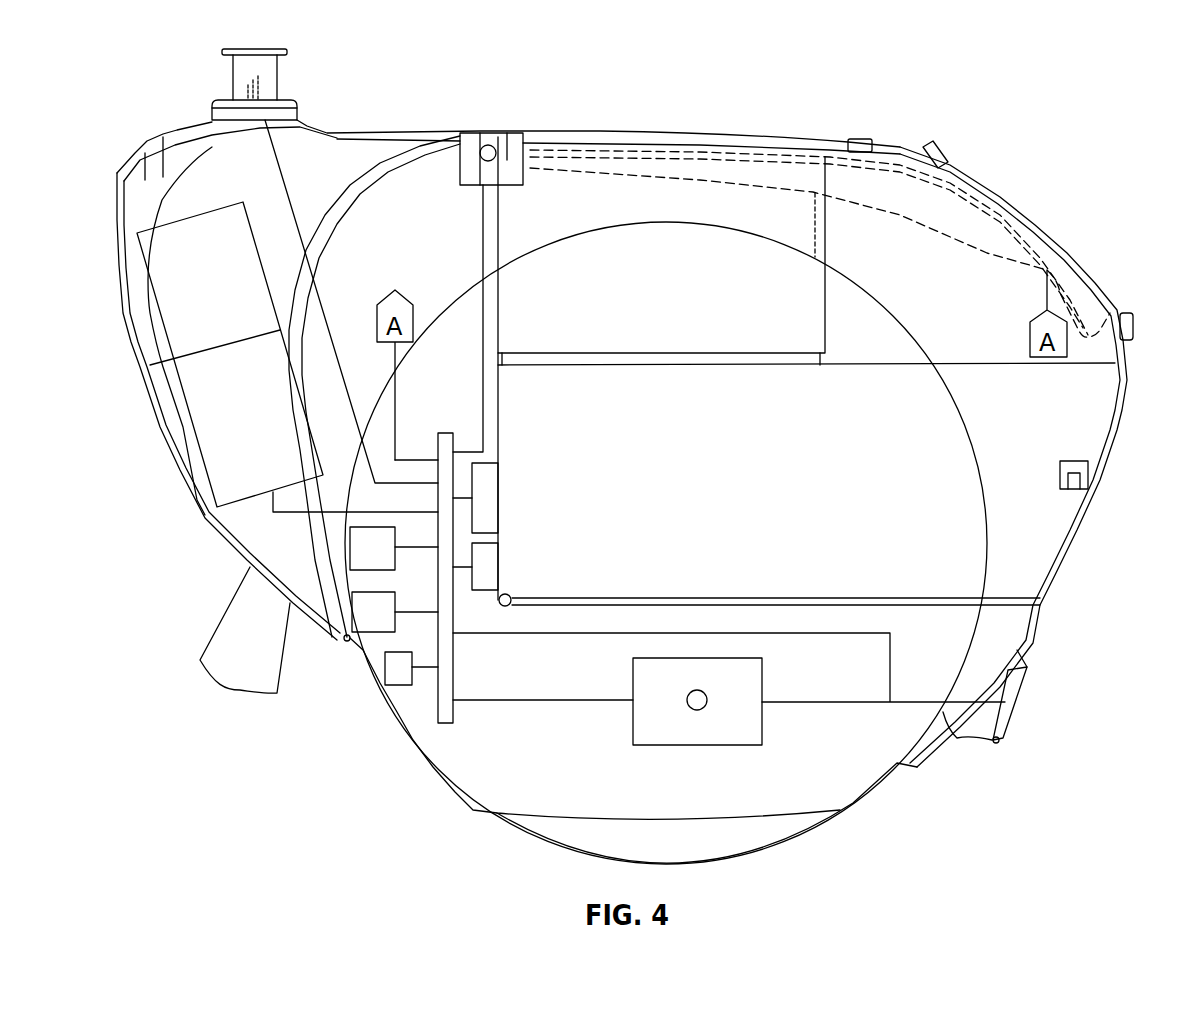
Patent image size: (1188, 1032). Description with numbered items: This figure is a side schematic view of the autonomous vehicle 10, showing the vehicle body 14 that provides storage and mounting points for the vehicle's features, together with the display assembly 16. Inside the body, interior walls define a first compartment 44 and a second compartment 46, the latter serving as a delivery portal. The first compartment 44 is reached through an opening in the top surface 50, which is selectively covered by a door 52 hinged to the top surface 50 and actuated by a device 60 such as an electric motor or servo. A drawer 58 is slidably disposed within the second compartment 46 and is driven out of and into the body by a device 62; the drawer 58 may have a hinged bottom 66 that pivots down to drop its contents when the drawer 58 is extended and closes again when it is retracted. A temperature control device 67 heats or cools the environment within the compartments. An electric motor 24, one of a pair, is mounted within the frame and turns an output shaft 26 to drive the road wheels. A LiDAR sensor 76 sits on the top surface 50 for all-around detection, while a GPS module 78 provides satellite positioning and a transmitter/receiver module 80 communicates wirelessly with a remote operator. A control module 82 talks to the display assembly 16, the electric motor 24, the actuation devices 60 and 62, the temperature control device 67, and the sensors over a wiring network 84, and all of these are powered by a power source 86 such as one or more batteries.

The autonomous vehicle 10 is at (128, 59).
The vehicle body 14 is at (868, 139).
The display assembly 16 is at (936, 143).
The electric motor 24 is at (768, 700).
The output shaft 26 is at (697, 712).
The first compartment 44 is at (660, 287).
The second compartment 46 is at (742, 502).
The top surface 50 is at (417, 131).
The door 52 is at (563, 143).
The drawer 58 is at (1117, 432).
The device 60 is at (458, 183).
The device 62 is at (492, 465).
The hinged bottom 66 is at (795, 597).
The temperature control device 67 is at (492, 548).
The LiDAR sensor 76 is at (277, 84).
The GPS module 78 is at (384, 672).
The transmitter/receiver module 80 is at (387, 627).
The control module 82 is at (386, 563).
The wiring network 84 is at (443, 433).
The power source 86 is at (222, 292).